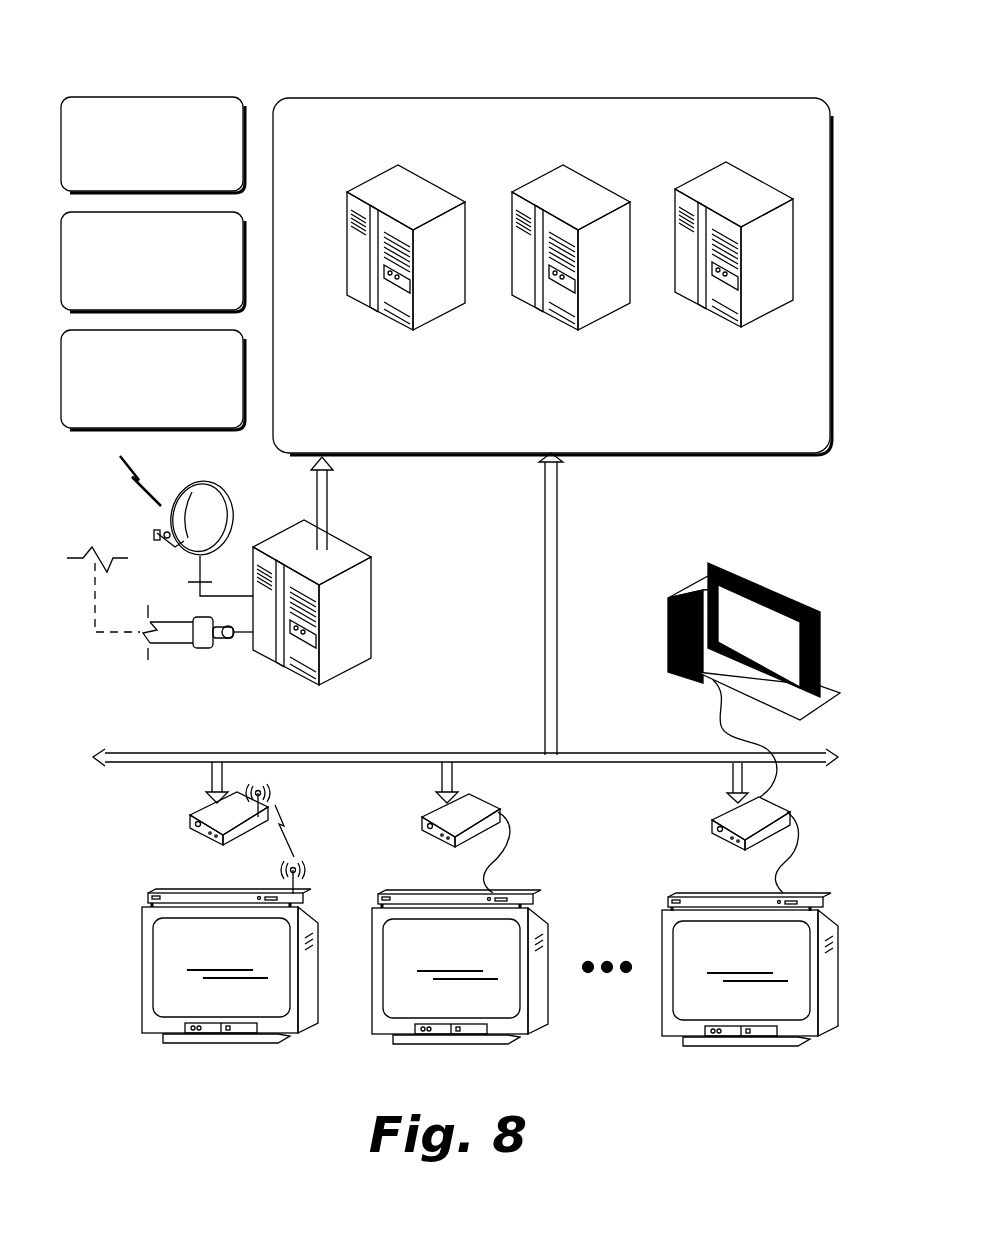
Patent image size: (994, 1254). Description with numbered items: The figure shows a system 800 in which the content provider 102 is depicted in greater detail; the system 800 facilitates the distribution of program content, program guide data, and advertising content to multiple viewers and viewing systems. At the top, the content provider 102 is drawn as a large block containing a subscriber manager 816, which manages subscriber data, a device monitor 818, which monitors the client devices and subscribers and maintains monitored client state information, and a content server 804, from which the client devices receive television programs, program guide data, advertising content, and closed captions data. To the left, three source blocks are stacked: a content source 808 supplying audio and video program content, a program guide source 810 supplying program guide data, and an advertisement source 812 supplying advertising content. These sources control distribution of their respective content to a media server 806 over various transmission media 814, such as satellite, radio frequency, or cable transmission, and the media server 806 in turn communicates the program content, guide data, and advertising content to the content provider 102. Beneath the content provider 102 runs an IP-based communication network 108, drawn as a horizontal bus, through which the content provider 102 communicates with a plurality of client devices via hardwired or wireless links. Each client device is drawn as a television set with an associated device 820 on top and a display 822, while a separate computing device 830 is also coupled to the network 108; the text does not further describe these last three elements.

The system 800 is at (655, 66).
The content provider 102 is at (671, 142).
The communication network 108 is at (377, 752).
The content server 804 is at (714, 414).
The media server 806 is at (414, 634).
The content source 808 is at (133, 173).
The program guide source 810 is at (133, 297).
The advertisement source 812 is at (133, 415).
The transmission media 814 is at (183, 666).
The subscriber manager 816 is at (389, 422).
The device monitor 818 is at (553, 423).
The client device (media recorder) 820 is at (177, 892).
The television display 822 is at (140, 942).
The computing device 830 is at (687, 592).